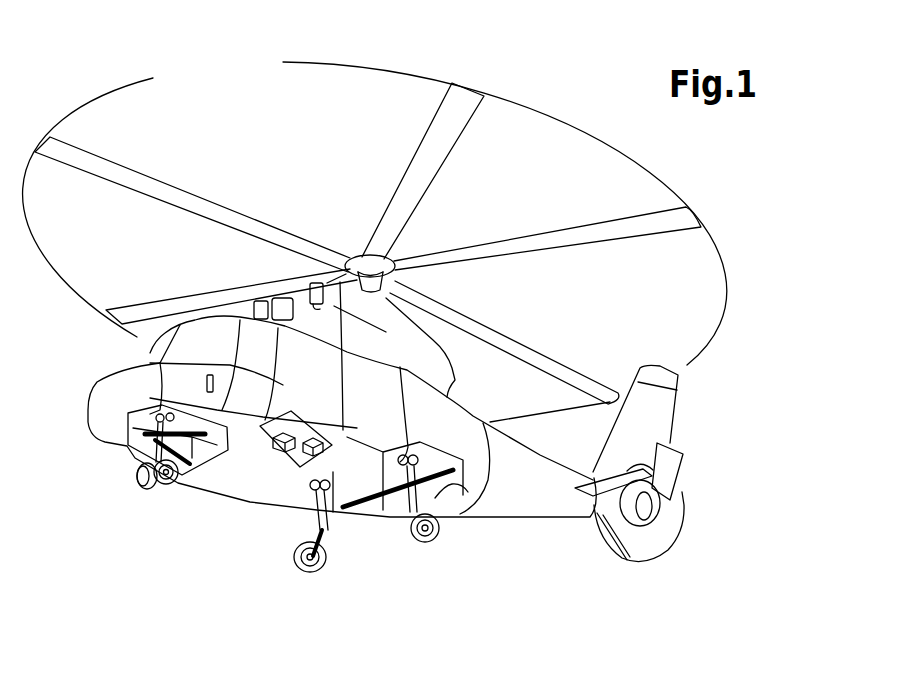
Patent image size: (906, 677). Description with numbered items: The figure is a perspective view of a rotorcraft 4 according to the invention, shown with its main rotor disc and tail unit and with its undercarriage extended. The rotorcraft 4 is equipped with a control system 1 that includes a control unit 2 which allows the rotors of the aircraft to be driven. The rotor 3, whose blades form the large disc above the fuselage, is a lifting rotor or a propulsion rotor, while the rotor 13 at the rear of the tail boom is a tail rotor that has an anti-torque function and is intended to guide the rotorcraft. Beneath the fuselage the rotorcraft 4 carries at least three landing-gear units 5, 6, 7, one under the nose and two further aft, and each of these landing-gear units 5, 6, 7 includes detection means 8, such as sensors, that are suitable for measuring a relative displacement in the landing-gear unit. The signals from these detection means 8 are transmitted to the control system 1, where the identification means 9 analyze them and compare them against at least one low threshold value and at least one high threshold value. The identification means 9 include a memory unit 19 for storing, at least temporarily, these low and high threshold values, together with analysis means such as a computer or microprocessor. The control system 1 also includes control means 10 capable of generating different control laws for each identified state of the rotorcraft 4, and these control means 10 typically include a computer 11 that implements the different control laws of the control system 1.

The control system 1 is at (253, 476).
The control unit 2 is at (207, 388).
The rotor 3 is at (463, 98).
The rotorcraft 4 is at (698, 407).
The landing-gear unit 5 is at (137, 480).
The landing-gear unit 6 is at (305, 574).
The landing-gear unit 7 is at (430, 550).
The detection means 8 is at (173, 484).
The identification means 9 is at (287, 428).
The control means 10 is at (316, 463).
The computer 11 is at (340, 467).
The tail rotor 13 is at (652, 513).
The memory unit 19 is at (262, 457).